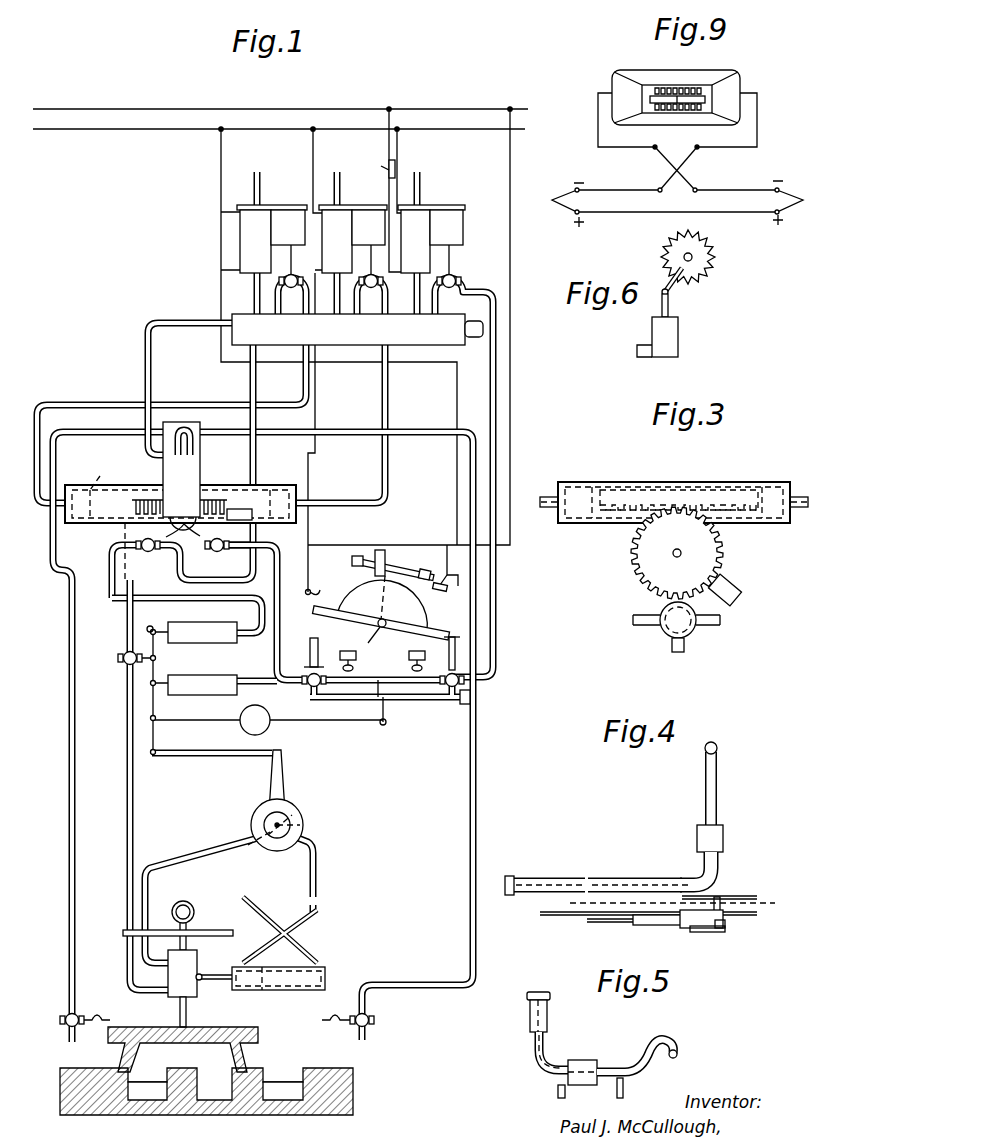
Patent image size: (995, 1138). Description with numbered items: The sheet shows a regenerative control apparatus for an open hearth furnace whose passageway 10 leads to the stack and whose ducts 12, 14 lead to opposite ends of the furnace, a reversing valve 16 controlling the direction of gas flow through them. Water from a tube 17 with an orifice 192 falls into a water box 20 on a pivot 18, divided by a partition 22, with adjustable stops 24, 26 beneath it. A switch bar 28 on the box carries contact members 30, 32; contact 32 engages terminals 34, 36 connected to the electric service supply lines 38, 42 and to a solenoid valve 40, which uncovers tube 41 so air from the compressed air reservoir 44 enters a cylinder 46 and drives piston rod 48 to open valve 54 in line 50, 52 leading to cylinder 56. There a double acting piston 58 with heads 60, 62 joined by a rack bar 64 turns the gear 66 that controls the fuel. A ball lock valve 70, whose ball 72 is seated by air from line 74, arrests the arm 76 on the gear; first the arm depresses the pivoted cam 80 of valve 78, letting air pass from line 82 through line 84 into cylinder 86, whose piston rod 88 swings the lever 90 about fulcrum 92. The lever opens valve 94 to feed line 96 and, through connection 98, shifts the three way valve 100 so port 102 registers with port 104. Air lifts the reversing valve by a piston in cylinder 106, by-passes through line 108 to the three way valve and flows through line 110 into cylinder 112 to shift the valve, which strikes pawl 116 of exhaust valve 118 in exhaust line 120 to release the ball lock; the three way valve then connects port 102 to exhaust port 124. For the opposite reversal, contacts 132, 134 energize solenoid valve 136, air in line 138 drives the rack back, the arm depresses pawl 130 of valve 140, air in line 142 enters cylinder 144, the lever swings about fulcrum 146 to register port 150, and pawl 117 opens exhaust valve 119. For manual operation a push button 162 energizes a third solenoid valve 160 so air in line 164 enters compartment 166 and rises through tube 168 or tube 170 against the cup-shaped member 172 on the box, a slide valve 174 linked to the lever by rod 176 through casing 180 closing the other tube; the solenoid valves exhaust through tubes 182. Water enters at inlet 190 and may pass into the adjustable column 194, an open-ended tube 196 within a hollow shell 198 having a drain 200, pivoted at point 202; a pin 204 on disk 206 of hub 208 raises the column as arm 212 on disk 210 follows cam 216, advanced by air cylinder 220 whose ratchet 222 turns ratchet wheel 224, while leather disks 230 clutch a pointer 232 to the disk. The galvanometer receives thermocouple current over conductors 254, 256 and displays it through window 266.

In FIG. 1, the passageway 10 is at (213, 1100).
In FIG. 1, the duct 12 is at (206, 1091).
In FIG. 1, the duct 14 is at (333, 1092).
In FIG. 1, the reversing valve 16 is at (210, 1027).
In FIG. 1, the tube 17 is at (384, 549).
In FIG. 4, the tube 17 is at (710, 742).
In FIG. 5, the tube 17 is at (670, 1043).
In FIG. 1, the pivot 18 is at (396, 645).
In FIG. 1, the water box 20 is at (420, 618).
In FIG. 1, the partition 22 is at (424, 600).
In FIG. 1, the stop 24 is at (320, 652).
In FIG. 1, the stop 26 is at (358, 658).
In FIG. 9, the stop 26 is at (694, 86).
In FIG. 1, the switch bar 28 is at (404, 562).
In FIG. 1, the contact member 30 is at (358, 555).
In FIG. 1, the contact member 32 is at (424, 571).
In FIG. 1, the terminal 34 is at (444, 560).
In FIG. 1, the terminal 36 is at (448, 590).
In FIG. 1, the electric service supply line 38 is at (455, 108).
In FIG. 1, the solenoid valve 40 is at (240, 228).
In FIG. 1, the tube 41 is at (254, 293).
In FIG. 1, the service supply line 42 is at (124, 131).
In FIG. 1, the compressed air reservoir 44 is at (357, 329).
In FIG. 1, the cylinder 46 is at (288, 227).
In FIG. 1, the piston rod 48 is at (293, 270).
In FIG. 1, the line 50 is at (256, 332).
In FIG. 1, the air supply line 52 is at (293, 402).
In FIG. 3, the air supply line 52 is at (551, 496).
In FIG. 1, the valve 54 is at (281, 332).
In FIG. 1, the cylinder 56 is at (75, 490).
In FIG. 3, the cylinder 56 is at (575, 485).
In FIG. 1, the double acting piston 58 is at (106, 518).
In FIG. 3, the double acting piston 58 is at (641, 495).
In FIG. 3, the head 60 is at (600, 486).
In FIG. 3, the head 62 is at (767, 486).
In FIG. 3, the rack bar 64 is at (690, 500).
In FIG. 1, the gear 66 is at (188, 516).
In FIG. 3, the gear 66 is at (710, 545).
In FIG. 1, the ball lock valve 70 is at (181, 469).
In FIG. 3, the ball lock valve 70 is at (663, 632).
In FIG. 1, the ball 72 is at (198, 504).
In FIG. 3, the ball 72 is at (688, 640).
In FIG. 1, the line 74 is at (143, 351).
In FIG. 1, the lever or arm 76 is at (246, 514).
In FIG. 3, the lever or arm 76 is at (736, 590).
In FIG. 1, the valve 78 is at (219, 558).
In FIG. 1, the pivoted cam 80 is at (205, 533).
In FIG. 1, the line 82 is at (258, 535).
In FIG. 1, the line 84 is at (305, 600).
In FIG. 1, the cylinder 86 is at (202, 685).
In FIG. 1, the piston rod 88 is at (168, 678).
In FIG. 1, the lever 90 is at (150, 735).
In FIG. 1, the fulcrum 92 is at (150, 626).
In FIG. 1, the valve 94 is at (120, 659).
In FIG. 1, the line 96 is at (127, 771).
In FIG. 1, the connection 98 is at (203, 757).
In FIG. 1, the three way valve 100 is at (286, 814).
In FIG. 1, the port 102 is at (292, 822).
In FIG. 1, the port 104 is at (302, 831).
In FIG. 1, the cylinder 106 is at (178, 964).
In FIG. 1, the line 108 is at (197, 851).
In FIG. 1, the line 110 is at (300, 916).
In FIG. 1, the cylinder 112 is at (276, 992).
In FIG. 1, the pivoted pawl 116 is at (332, 1014).
In FIG. 1, the pivoted pawl 117 is at (97, 1014).
In FIG. 1, the valve 118 is at (370, 1024).
In FIG. 1, the exhaust valve 119 is at (60, 1024).
In FIG. 1, the air exhaust line 120 is at (469, 944).
In FIG. 3, the air exhaust line 120 is at (704, 626).
In FIG. 1, the exhaust port 124 is at (311, 849).
In FIG. 1, the pivoted pawl or detent 130 is at (130, 541).
In FIG. 1, the contact member 132 is at (382, 606).
In FIG. 1, the contact member 134 is at (312, 586).
In FIG. 1, the solenoid valve 136 is at (353, 239).
In FIG. 1, the line 138 is at (390, 394).
In FIG. 1, the valve 140 is at (157, 560).
In FIG. 1, the line 142 is at (215, 602).
In FIG. 1, the cylinder 144 is at (202, 632).
In FIG. 1, the fulcrum 146 is at (150, 684).
In FIG. 1, the port 150 is at (248, 845).
In FIG. 1, the third solenoid valve 160 is at (421, 225).
In FIG. 1, the push button 162 is at (389, 164).
In FIG. 1, the line 164 is at (512, 392).
In FIG. 1, the compartment 166 is at (430, 708).
In FIG. 1, the tube 168 is at (309, 655).
In FIG. 1, the tube 170 is at (458, 641).
In FIG. 1, the elongated member 172 is at (446, 638).
In FIG. 1, the slide valve 174 is at (387, 725).
In FIG. 1, the rod 176 is at (306, 723).
In FIG. 1, the casing 180 is at (257, 720).
In FIG. 1, the tubes 182 is at (261, 182).
In FIG. 4, the inlet 190 is at (704, 800).
In FIG. 5, the inlet 190 is at (624, 1082).
In FIG. 4, the orifice 192 is at (718, 746).
In FIG. 5, the orifice 192 is at (678, 1056).
In FIG. 4, the adjustable column 194 is at (526, 877).
In FIG. 5, the adjustable column 194 is at (530, 1017).
In FIG. 4, the open-ended tube 196 is at (636, 878).
In FIG. 5, the open-ended tube 196 is at (543, 1022).
In FIG. 4, the hollow shell 198 is at (590, 876).
In FIG. 5, the hollow shell 198 is at (545, 1060).
In FIG. 4, the drain 200 is at (720, 860).
In FIG. 5, the drain 200 is at (556, 1088).
In FIG. 4, the pivot point 202 is at (724, 832).
In FIG. 5, the pivot point 202 is at (585, 1064).
In FIG. 4, the pin 204 is at (712, 880).
In FIG. 4, the disk 206 is at (745, 896).
In FIG. 6, the hub 208 is at (694, 259).
In FIG. 4, the hub 208 is at (722, 928).
In FIG. 4, the disk 210 is at (701, 928).
In FIG. 4, the arm 212 is at (655, 925).
In FIG. 4, the cam 216 is at (595, 923).
In FIG. 6, the air-operated cylinder 220 is at (678, 340).
In FIG. 6, the ratchet 222 is at (668, 286).
In FIG. 6, the ratchet wheel 224 is at (706, 247).
In FIG. 4, the leather disks 230 is at (748, 914).
In FIG. 4, the pointer 232 is at (543, 916).
In FIG. 9, the conductor 254 is at (690, 158).
In FIG. 9, the conductor 256 is at (650, 158).
In FIG. 9, the window 266 is at (660, 94).